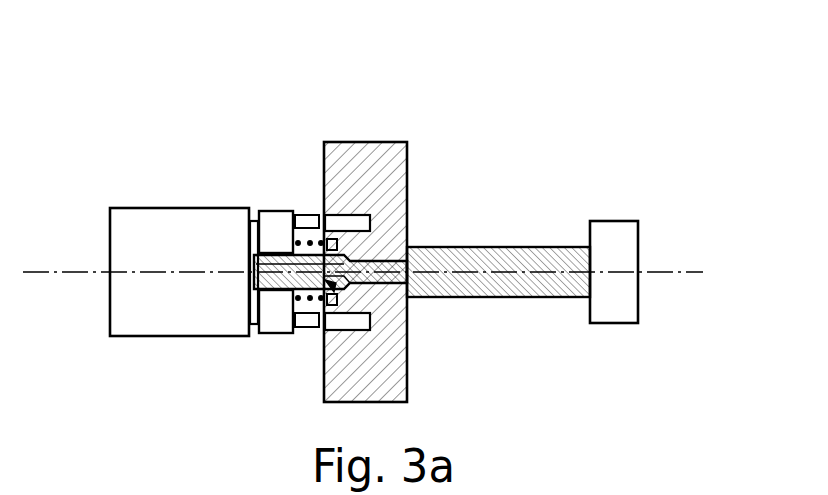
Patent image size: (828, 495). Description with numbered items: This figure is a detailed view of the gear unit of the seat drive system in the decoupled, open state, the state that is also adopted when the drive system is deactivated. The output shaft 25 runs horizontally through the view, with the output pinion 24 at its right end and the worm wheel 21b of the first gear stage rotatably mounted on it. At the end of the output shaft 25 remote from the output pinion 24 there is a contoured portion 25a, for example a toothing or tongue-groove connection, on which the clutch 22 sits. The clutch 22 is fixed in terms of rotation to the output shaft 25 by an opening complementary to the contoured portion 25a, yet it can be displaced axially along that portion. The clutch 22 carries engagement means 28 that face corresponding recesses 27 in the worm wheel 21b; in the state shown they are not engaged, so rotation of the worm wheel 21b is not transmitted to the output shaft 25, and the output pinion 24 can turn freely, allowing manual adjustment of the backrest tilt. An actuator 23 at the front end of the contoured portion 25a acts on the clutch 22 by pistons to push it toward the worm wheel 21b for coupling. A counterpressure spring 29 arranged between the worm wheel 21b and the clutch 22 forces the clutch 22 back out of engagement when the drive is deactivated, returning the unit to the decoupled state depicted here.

The worm wheel 21b is at (380, 158).
The clutch 22 is at (275, 318).
The actuator 23 is at (187, 313).
The output pinion 24 is at (610, 237).
The output shaft 25 is at (473, 263).
The contoured portion 25a is at (335, 300).
The recesses 27 is at (360, 218).
The engagement means 28 is at (308, 217).
The counterpressure spring 29 is at (313, 323).